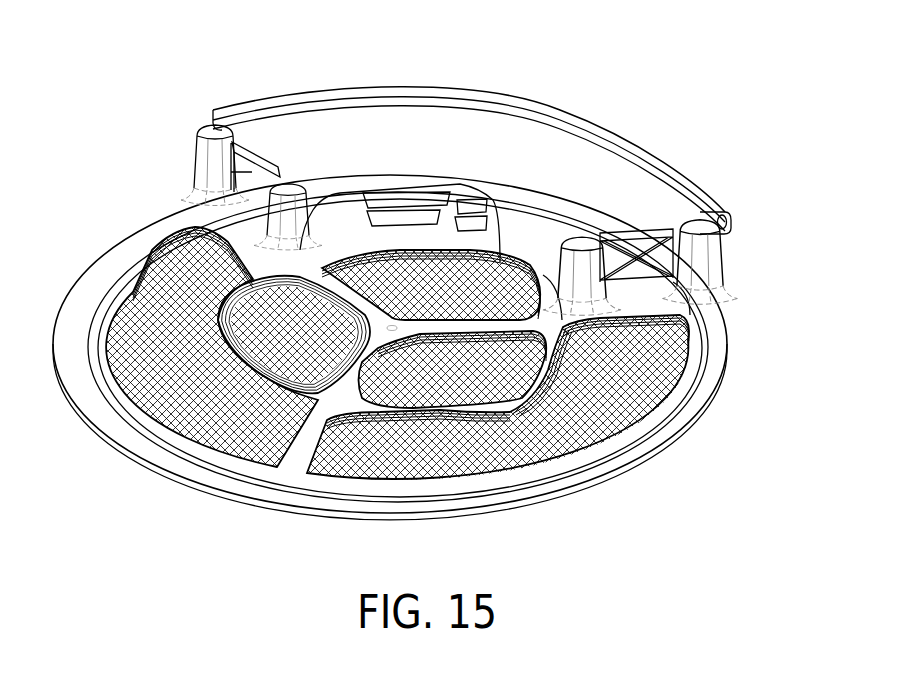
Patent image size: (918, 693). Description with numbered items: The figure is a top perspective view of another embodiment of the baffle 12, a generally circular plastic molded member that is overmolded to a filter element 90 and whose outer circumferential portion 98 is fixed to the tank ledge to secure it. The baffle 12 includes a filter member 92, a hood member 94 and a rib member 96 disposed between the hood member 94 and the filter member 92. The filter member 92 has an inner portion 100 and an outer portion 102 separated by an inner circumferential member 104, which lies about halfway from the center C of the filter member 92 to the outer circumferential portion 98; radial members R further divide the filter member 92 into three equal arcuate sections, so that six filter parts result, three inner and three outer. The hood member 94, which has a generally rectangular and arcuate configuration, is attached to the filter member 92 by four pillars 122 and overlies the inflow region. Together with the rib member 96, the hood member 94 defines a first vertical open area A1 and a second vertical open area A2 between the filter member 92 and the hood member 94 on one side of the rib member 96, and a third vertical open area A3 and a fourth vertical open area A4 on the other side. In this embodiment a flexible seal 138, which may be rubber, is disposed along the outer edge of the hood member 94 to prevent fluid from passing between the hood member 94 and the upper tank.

The baffle 12 is at (697, 427).
The filter element 90 is at (640, 385).
The filter member 92 is at (570, 473).
The hood member 94 is at (647, 187).
The rib member 96 is at (543, 275).
The outer circumferential portion 98 is at (193, 472).
The inner portion 100 is at (443, 388).
The outer portion 102 is at (167, 402).
The inner circumferential member 104 is at (401, 415).
The pillars 122 is at (217, 157).
The flexible seal 138 is at (483, 90).
The first vertical open area A1 is at (333, 220).
The second vertical open area A2 is at (250, 190).
The third vertical open area A3 is at (542, 277).
The fourth vertical open area A4 is at (640, 293).
The center C is at (393, 327).
The radial members R is at (323, 303).